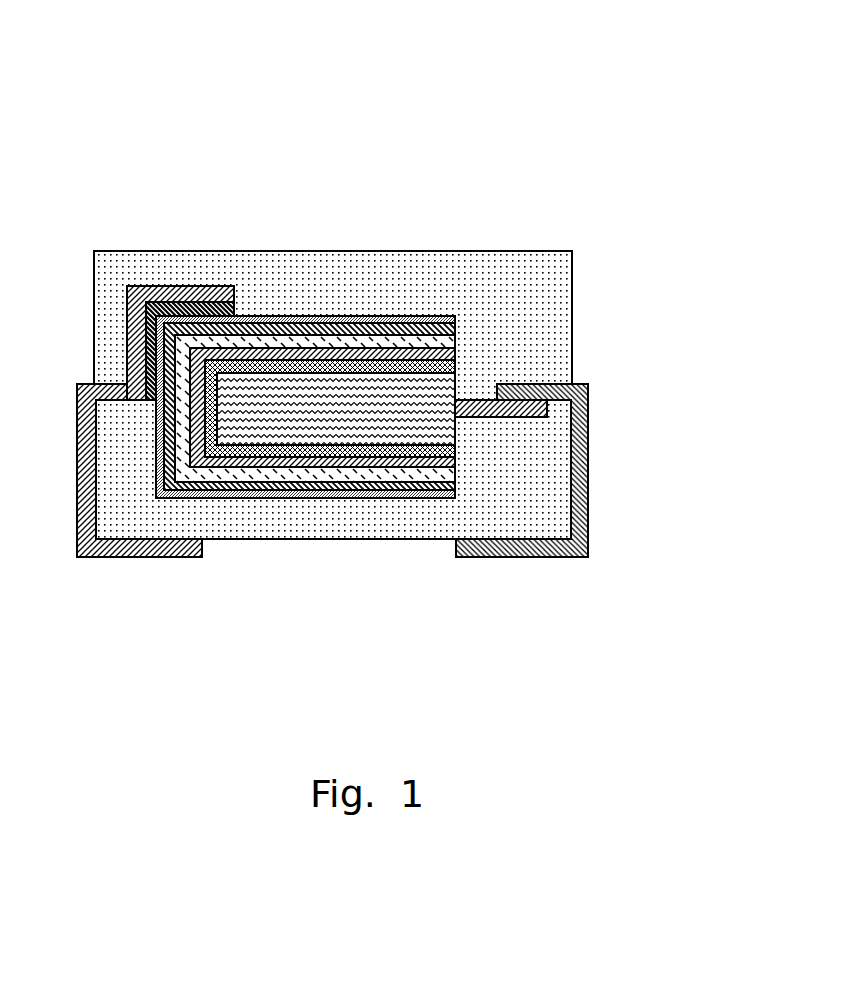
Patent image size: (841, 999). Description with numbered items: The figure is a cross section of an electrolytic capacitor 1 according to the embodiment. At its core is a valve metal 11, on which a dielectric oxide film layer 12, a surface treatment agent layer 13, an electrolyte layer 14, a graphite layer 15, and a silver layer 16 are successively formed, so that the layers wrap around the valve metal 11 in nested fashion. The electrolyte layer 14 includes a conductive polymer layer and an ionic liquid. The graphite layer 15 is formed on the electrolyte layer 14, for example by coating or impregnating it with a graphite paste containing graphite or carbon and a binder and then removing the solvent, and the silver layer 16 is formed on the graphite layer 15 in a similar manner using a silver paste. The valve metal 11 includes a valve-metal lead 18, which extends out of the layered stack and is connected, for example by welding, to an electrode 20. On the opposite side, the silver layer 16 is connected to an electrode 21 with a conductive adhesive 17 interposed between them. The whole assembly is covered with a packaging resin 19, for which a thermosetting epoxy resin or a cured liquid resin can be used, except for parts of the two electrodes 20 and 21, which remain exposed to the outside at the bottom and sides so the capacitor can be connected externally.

The electrolytic capacitor 1 is at (390, 337).
The valve metal 11 is at (457, 432).
The dielectric oxide film layer 12 is at (458, 369).
The surface treatment agent layer 13 is at (458, 355).
The electrolyte layer 14 is at (458, 340).
The graphite layer 15 is at (458, 326).
The silver layer 16 is at (357, 318).
The conductive adhesive 17 is at (233, 307).
The valve-metal lead 18 is at (533, 417).
The packaging resin 19 is at (137, 262).
The electrode 20 is at (520, 557).
The electrode 21 is at (158, 557).